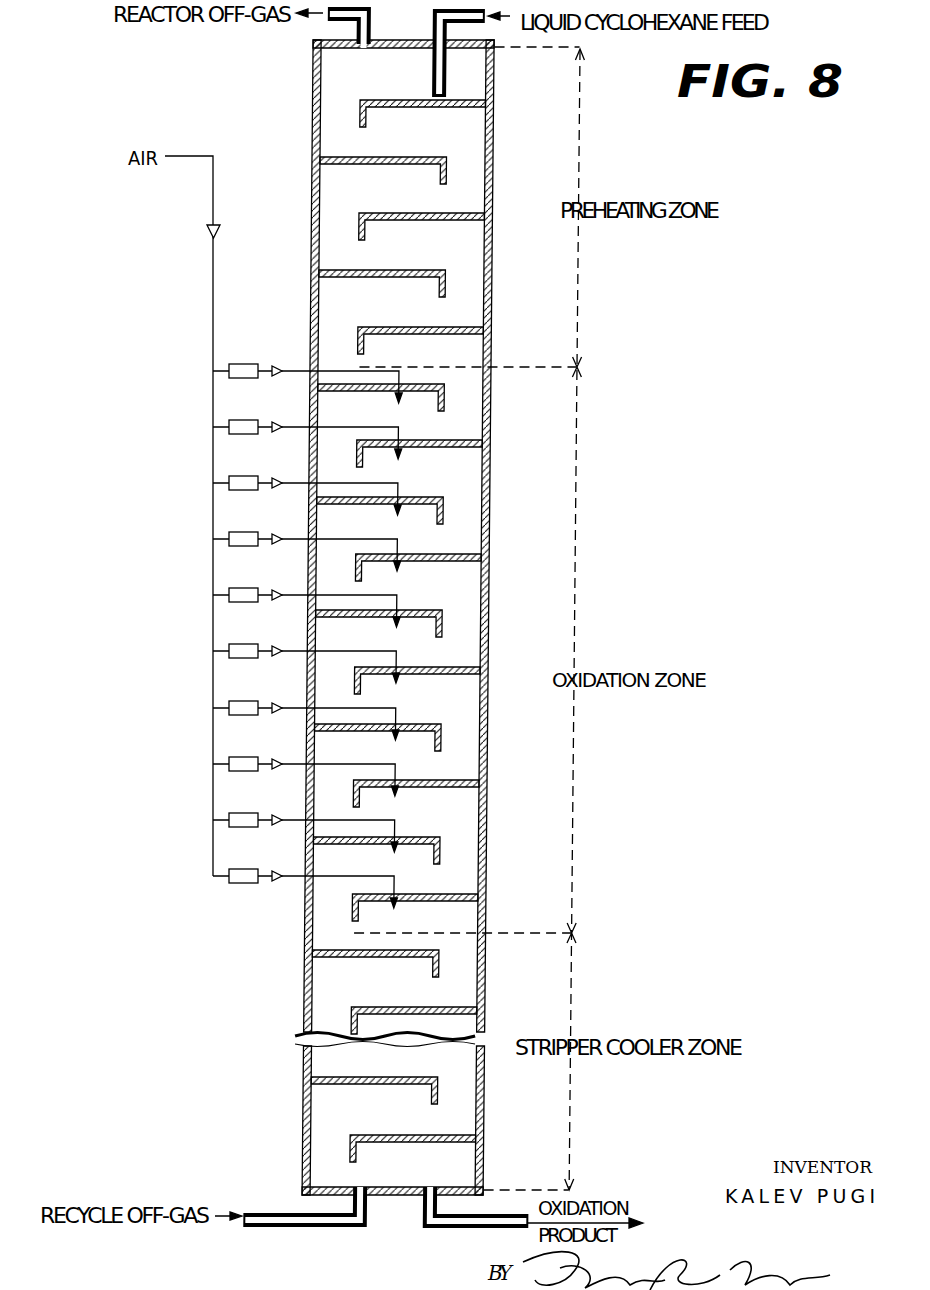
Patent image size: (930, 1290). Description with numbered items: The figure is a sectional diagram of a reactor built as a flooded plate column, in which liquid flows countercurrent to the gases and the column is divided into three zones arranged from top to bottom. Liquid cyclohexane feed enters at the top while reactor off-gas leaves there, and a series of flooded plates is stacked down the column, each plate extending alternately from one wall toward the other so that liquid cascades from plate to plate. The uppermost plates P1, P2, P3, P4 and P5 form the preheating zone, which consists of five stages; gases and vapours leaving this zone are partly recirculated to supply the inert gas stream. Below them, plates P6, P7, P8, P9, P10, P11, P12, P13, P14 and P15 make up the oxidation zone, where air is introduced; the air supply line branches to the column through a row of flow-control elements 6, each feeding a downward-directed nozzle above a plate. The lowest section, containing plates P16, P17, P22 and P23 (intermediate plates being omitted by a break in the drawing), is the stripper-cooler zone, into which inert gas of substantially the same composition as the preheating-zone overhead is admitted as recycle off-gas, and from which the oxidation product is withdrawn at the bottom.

The plate 1 (preheating zone tray) P1 is at (457, 100).
The plate 2 (preheating zone tray) P2 is at (348, 165).
The plate 3 (preheating zone tray) P3 is at (457, 213).
The plate 4 (preheating zone tray) P4 is at (348, 278).
The plate 5 (preheating zone tray) P5 is at (457, 327).
The plate 6 (oxidation zone tray) P6 is at (352, 392).
The plate 7 (oxidation zone tray) P7 is at (457, 440).
The plate 8 (oxidation zone tray) P8 is at (345, 505).
The plate 9 (oxidation zone tray) P9 is at (457, 554).
The plate 10 (oxidation zone tray) P10 is at (345, 618).
The plate 11 (oxidation zone tray) P11 is at (457, 667).
The plate 12 (oxidation zone tray) P12 is at (345, 732).
The plate 13 (oxidation zone tray) P13 is at (457, 780).
The plate 14 (oxidation zone tray) P14 is at (342, 845).
The plate 15 (oxidation zone tray) P15 is at (457, 894).
The plate 16 (stripper cooler zone tray) P16 is at (328, 957).
The plate 17 (stripper cooler zone tray) P17 is at (457, 1007).
The plate 22 (stripper cooler zone tray) P22 is at (326, 1084).
The plate 23 (stripper cooler zone tray) P23 is at (457, 1135).
The air flow control valve / sparger 6 is at (242, 876).